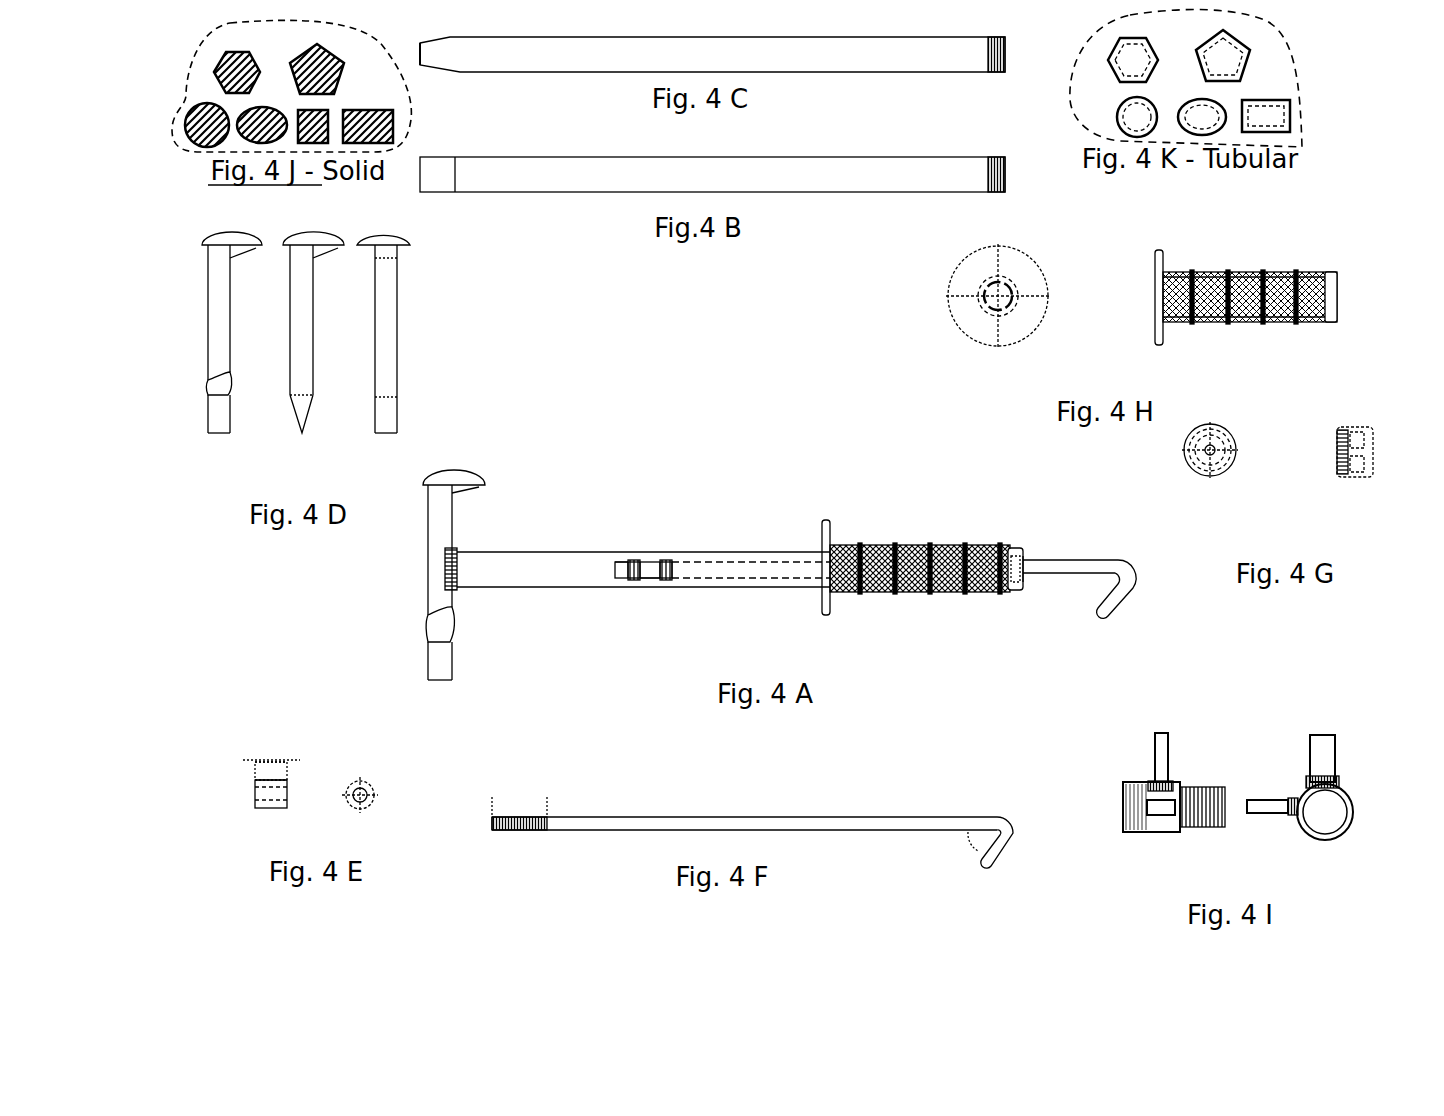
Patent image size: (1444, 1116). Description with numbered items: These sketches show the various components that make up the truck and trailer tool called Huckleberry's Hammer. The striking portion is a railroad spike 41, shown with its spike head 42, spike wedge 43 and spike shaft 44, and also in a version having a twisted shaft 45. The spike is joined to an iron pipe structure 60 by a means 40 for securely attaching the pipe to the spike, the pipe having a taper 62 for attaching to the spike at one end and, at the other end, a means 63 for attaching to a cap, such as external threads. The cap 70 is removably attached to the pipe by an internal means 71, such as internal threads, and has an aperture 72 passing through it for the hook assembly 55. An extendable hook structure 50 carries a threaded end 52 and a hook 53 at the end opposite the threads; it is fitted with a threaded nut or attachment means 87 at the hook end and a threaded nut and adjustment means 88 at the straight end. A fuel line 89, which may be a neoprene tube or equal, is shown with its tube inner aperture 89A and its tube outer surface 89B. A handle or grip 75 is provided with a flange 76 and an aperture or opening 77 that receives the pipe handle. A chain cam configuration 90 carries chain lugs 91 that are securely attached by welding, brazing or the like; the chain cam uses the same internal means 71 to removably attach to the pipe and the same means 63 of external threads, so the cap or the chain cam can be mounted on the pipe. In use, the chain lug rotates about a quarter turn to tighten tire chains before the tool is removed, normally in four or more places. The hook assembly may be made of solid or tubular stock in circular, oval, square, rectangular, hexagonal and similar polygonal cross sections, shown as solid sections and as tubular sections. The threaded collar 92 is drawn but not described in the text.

In FIG. 4A, the means for securely attaching pipe to spike 40 is at (493, 545).
In FIG. 4D, the railroad spike 41 is at (397, 345).
In FIG. 4D, the spike head 42 is at (378, 233).
In FIG. 4D, the spike wedge 43 is at (378, 422).
In FIG. 4A, the spike shaft 44 is at (427, 558).
In FIG. 4D, the twisted shaft 45 is at (204, 334).
In FIG. 4A, the twisted shaft 45 is at (406, 621).
In FIG. 4J, the extendable hook structure 50 is at (410, 125).
In FIG. 4K, the extendable hook structure 50 is at (1068, 97).
In FIG. 4A, the extendable hook structure 50 is at (730, 568).
In FIG. 4F, the extendable hook structure 50 is at (731, 815).
In FIG. 4F, the threaded end 52 is at (522, 826).
In FIG. 4F, the hook 53 is at (1011, 815).
In FIG. 4A, the hook assembly 55 is at (1099, 558).
In FIG. 4C, the iron pipe structure 60 is at (700, 42).
In FIG. 4B, the iron pipe structure 60 is at (825, 183).
In FIG. 4A, the iron pipe structure 60 is at (624, 552).
In FIG. 4C, the taper for attaching to spike 62 is at (432, 67).
In FIG. 4B, the taper for attaching to spike 62 is at (437, 172).
In FIG. 4A, the taper for attaching to spike 62 is at (456, 551).
In FIG. 4C, the means for attaching to cap 63 is at (996, 73).
In FIG. 4B, the means for attaching to cap 63 is at (1007, 183).
In FIG. 4A, the means for attaching to cap 63 is at (990, 618).
In FIG. 4I, the means for attaching to cap 63 is at (1214, 790).
In FIG. 4A, the cap 70 is at (1023, 592).
In FIG. 4G, the cap 70 is at (1222, 426).
In FIG. 4A, the internal means to removably attach cap to pipe 71 is at (1011, 592).
In FIG. 4G, the internal means to removably attach cap to pipe 71 is at (1208, 455).
In FIG. 4I, the internal means to removably attach cap to pipe 71 is at (1135, 805).
In FIG. 4A, the aperture through cap 72 is at (1021, 549).
In FIG. 4G, the aperture through cap 72 is at (1218, 456).
In FIG. 4A, the handle/grip 75 is at (931, 545).
In FIG. 4H, the handle/grip 75 is at (1277, 272).
In FIG. 4A, the flange 76 is at (832, 525).
In FIG. 4H, the flange 76 is at (1160, 250).
In FIG. 4H, the aperture/opening for pipe handle 77 is at (1148, 296).
In FIG. 4A, the threaded nut or attachment means—hook end 87 is at (672, 580).
In FIG. 4A, the threaded nut and adjustment means—straight end 88 is at (626, 580).
In FIG. 4A, the fuel line 89 is at (652, 580).
In FIG. 4E, the fuel line 89 is at (254, 815).
In FIG. 4E, the tube inner aperture 89A is at (256, 784).
In FIG. 4E, the tube outer surface 89B is at (268, 772).
In FIG. 4I, the chain cam configuration 90 is at (1144, 842).
In FIG. 4I, the chain lugs 91 is at (1165, 745).
In FIG. 4I, the threaded collar 92 is at (1172, 785).